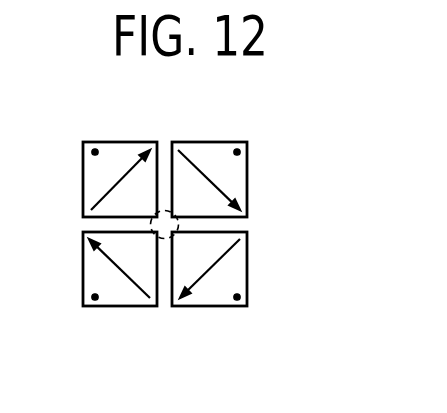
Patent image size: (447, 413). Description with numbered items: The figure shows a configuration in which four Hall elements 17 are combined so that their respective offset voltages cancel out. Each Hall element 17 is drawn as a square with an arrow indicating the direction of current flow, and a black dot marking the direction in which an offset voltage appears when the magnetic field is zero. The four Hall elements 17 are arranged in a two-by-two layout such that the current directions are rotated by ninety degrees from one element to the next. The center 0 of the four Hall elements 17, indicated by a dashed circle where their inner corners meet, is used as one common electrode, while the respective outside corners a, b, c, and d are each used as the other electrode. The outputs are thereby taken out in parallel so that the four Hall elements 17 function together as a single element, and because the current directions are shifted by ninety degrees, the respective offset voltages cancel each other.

The Hall element 17 is at (247, 177).
The outside corner a is at (95, 149).
The outside corner b is at (95, 300).
The outside corner c is at (237, 300).
The outside corner d is at (237, 149).
The center of the four Hall elements 0 is at (165, 207).